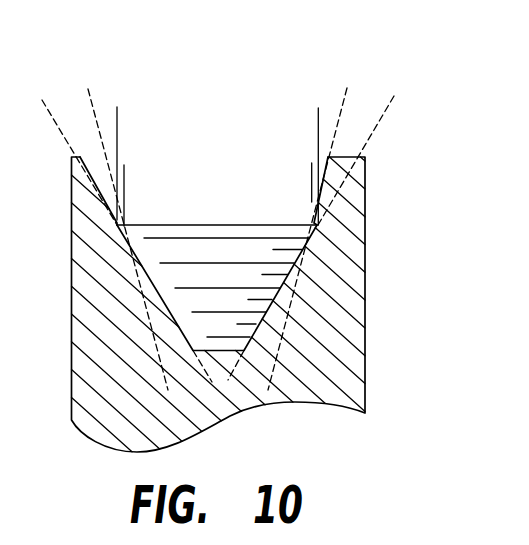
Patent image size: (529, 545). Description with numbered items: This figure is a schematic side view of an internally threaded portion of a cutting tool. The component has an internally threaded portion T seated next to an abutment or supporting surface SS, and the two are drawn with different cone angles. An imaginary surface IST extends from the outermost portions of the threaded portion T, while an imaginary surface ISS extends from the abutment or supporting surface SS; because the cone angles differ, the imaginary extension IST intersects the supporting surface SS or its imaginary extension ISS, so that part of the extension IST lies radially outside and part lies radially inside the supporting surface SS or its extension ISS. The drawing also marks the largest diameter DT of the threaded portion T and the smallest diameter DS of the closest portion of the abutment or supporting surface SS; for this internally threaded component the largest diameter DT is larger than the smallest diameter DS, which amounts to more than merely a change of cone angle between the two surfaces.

The largest diameter of the threaded portion DT is at (318, 133).
The smallest diameter of the abutment or supporting surface DS is at (312, 193).
The imaginary surface extending from the abutment or supporting surface ISS is at (344, 99).
The imaginary surface extending from the threaded portion IST is at (378, 125).
The abutment or supporting surface SS is at (280, 210).
The threaded portion T is at (267, 281).